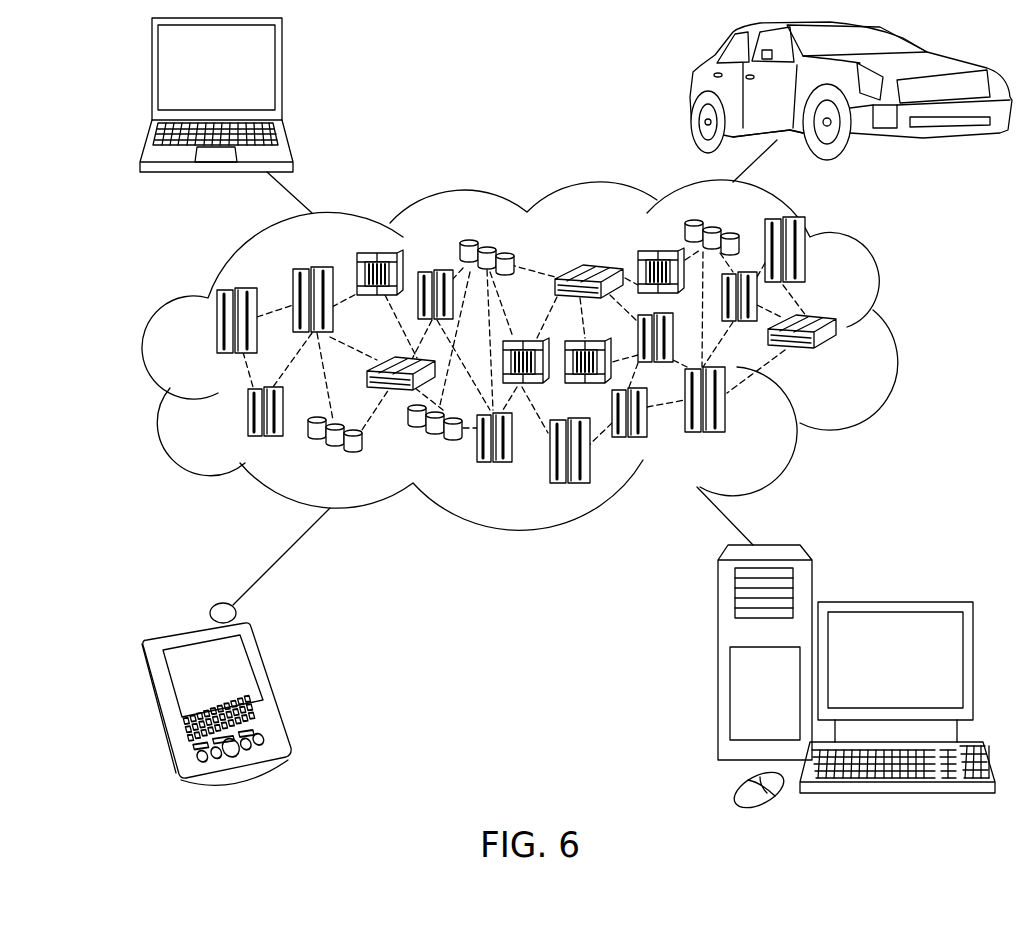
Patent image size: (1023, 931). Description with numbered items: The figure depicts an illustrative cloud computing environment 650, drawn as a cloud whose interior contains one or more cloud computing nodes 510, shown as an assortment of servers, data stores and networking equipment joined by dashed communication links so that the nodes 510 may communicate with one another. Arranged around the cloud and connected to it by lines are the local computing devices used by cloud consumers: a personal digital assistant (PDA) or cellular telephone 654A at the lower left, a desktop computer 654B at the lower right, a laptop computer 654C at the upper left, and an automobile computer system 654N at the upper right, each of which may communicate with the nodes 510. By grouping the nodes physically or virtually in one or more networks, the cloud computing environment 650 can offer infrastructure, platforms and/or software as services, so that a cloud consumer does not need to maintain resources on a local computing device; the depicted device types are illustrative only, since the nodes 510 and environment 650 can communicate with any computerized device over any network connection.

The cloud computing nodes 510 is at (833, 368).
The cloud computing environment 650 is at (893, 333).
The personal digital assistant (PDA) or cellular telephone 654A is at (272, 688).
The desktop computer 654B is at (892, 600).
The laptop computer 654C is at (282, 73).
The automobile computer system 654N is at (690, 90).